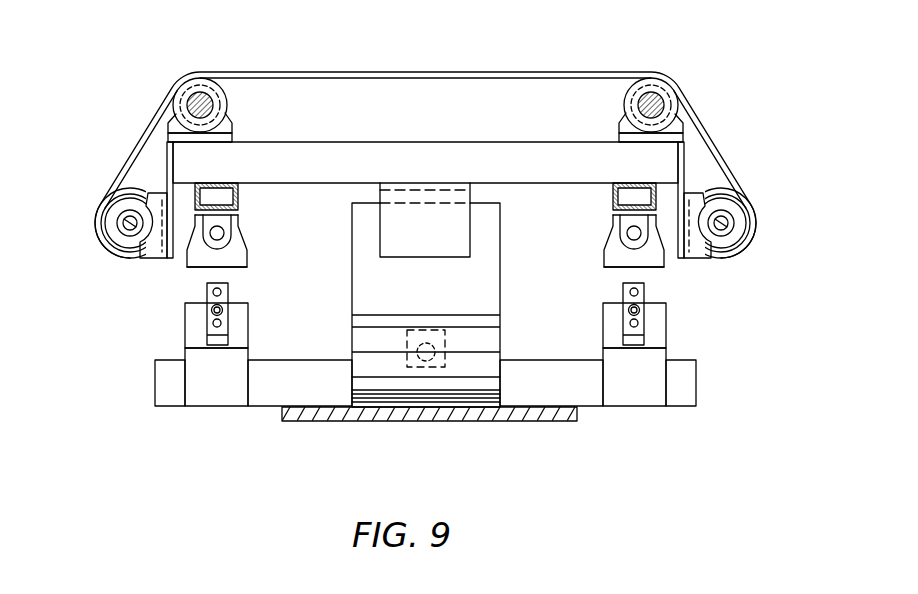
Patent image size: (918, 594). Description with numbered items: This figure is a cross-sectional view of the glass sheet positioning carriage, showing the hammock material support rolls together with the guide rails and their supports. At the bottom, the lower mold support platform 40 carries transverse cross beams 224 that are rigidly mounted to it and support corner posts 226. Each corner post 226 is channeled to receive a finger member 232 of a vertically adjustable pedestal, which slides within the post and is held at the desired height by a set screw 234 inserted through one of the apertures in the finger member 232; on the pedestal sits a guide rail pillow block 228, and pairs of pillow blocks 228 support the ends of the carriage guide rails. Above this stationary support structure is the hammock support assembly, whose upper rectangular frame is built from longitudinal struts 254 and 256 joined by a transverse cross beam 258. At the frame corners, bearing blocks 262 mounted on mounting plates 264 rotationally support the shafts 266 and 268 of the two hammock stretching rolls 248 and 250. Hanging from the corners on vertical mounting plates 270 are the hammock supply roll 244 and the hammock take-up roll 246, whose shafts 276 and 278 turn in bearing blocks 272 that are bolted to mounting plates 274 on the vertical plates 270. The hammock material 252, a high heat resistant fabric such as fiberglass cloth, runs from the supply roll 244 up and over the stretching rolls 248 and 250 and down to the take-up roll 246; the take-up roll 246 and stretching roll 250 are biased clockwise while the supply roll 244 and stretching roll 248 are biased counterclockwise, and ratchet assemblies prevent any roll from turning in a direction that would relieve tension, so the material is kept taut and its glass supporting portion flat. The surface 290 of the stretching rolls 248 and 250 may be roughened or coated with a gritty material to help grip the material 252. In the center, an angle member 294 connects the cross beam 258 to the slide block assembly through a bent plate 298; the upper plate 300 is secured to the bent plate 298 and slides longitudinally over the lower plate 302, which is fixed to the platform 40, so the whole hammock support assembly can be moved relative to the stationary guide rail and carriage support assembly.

The lower mold support platform 40 is at (390, 422).
The transverse cross beams 224 is at (262, 408).
The corner posts 226 is at (249, 336).
The guide rail pillow block 228 is at (246, 253).
The finger members 232 is at (206, 290).
The set screw 234 is at (224, 310).
The hammock supply roll 244 is at (96, 230).
The hammock take-up roll 246 is at (757, 232).
The hammock stretching roll 248 is at (181, 82).
The hammock stretching roll 250 is at (660, 74).
The hammock material 252 is at (370, 72).
The longitudinal strut 254 is at (240, 198).
The longitudinal strut 256 is at (611, 198).
The transverse cross beam 258 is at (380, 142).
The bearing blocks 262 is at (236, 121).
The mounting plates 264 is at (236, 138).
The shaft 266 is at (205, 103).
The shaft 268 is at (655, 102).
The vertical mounting plates 270 is at (166, 152).
The bearing blocks 272 is at (132, 252).
The mounting plates 274 is at (156, 196).
The shaft 276 is at (122, 218).
The shaft 278 is at (729, 220).
The surface 290 is at (223, 93).
The angle member 294 is at (378, 186).
The bent plate 298 is at (502, 250).
The upper plate 300 is at (502, 346).
The lower plate 302 is at (502, 368).